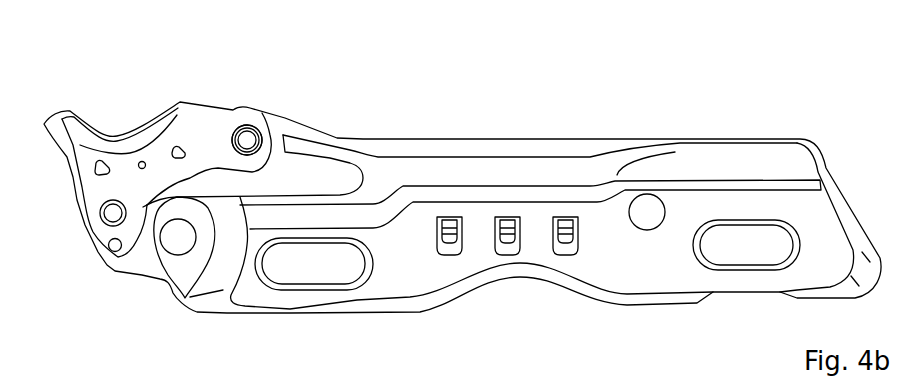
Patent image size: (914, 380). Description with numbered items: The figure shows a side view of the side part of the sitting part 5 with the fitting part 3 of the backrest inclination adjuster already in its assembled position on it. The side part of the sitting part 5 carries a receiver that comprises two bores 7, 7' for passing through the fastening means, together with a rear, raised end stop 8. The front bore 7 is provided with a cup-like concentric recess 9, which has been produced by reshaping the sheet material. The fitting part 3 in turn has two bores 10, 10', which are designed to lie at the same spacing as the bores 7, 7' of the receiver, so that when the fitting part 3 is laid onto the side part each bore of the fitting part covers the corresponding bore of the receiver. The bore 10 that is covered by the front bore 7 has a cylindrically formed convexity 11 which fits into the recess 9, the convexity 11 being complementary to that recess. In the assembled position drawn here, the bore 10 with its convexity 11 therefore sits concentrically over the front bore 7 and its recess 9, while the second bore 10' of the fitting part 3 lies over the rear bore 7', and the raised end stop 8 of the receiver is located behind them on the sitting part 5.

The fitting part 3 is at (158, 165).
The sitting part 5 is at (524, 160).
The front bore 7 is at (280, 99).
The bore 10 is at (267, 111).
The cup-like concentric recess 9 is at (247, 140).
The cylindrically formed convexity 11 is at (247, 140).
The rear bore 7' is at (78, 136).
The second bore 10' is at (87, 147).
The rear raised end stop 8 is at (116, 252).